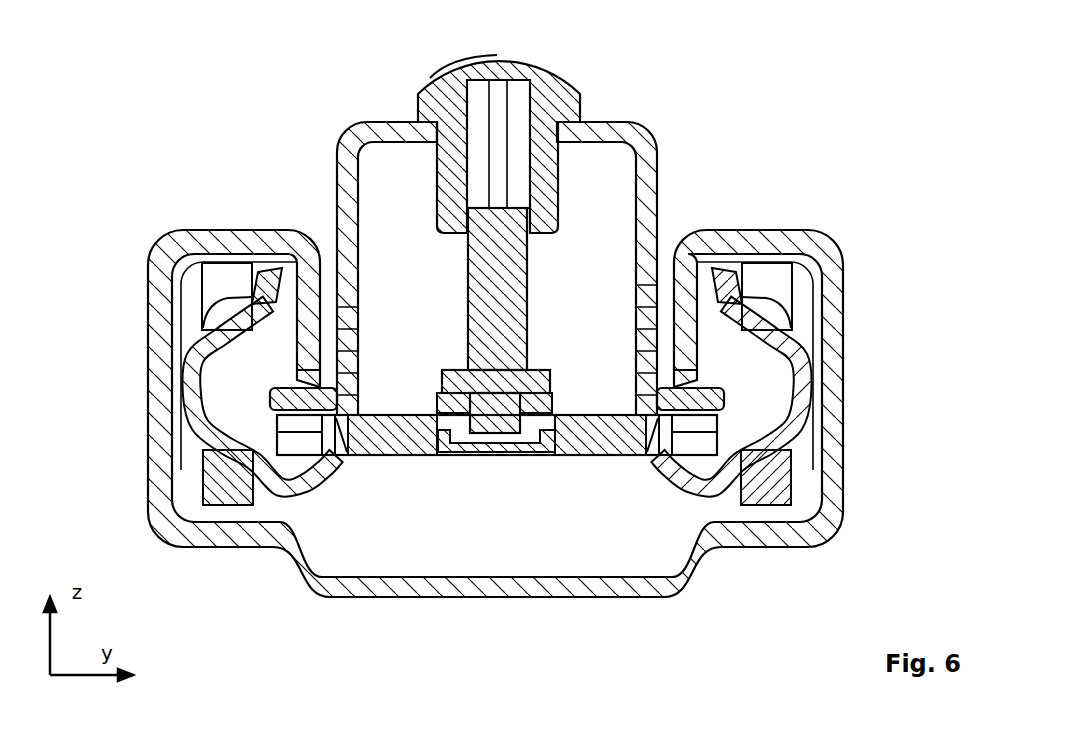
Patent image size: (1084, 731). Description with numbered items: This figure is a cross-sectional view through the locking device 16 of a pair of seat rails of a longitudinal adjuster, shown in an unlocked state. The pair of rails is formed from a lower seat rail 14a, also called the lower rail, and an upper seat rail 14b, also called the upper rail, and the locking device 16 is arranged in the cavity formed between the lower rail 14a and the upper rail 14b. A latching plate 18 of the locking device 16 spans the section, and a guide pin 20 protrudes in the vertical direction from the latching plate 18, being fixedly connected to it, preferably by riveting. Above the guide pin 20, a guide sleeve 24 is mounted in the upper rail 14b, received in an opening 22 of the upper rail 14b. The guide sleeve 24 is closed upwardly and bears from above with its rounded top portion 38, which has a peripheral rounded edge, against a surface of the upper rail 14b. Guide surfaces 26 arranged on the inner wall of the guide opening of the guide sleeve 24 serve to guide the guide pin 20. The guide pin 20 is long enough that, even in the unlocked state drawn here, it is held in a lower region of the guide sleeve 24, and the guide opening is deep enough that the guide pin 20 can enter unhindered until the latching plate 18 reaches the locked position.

The lower seat rail 14a is at (375, 592).
The upper seat rail 14b is at (343, 230).
The locking device 16 is at (730, 184).
The latching plate 18 is at (385, 432).
The guide pin 20 is at (497, 393).
The opening 22 is at (562, 133).
The guide sleeve 24 is at (453, 121).
The guide surfaces 26 is at (488, 98).
The top portion 38 is at (455, 75).